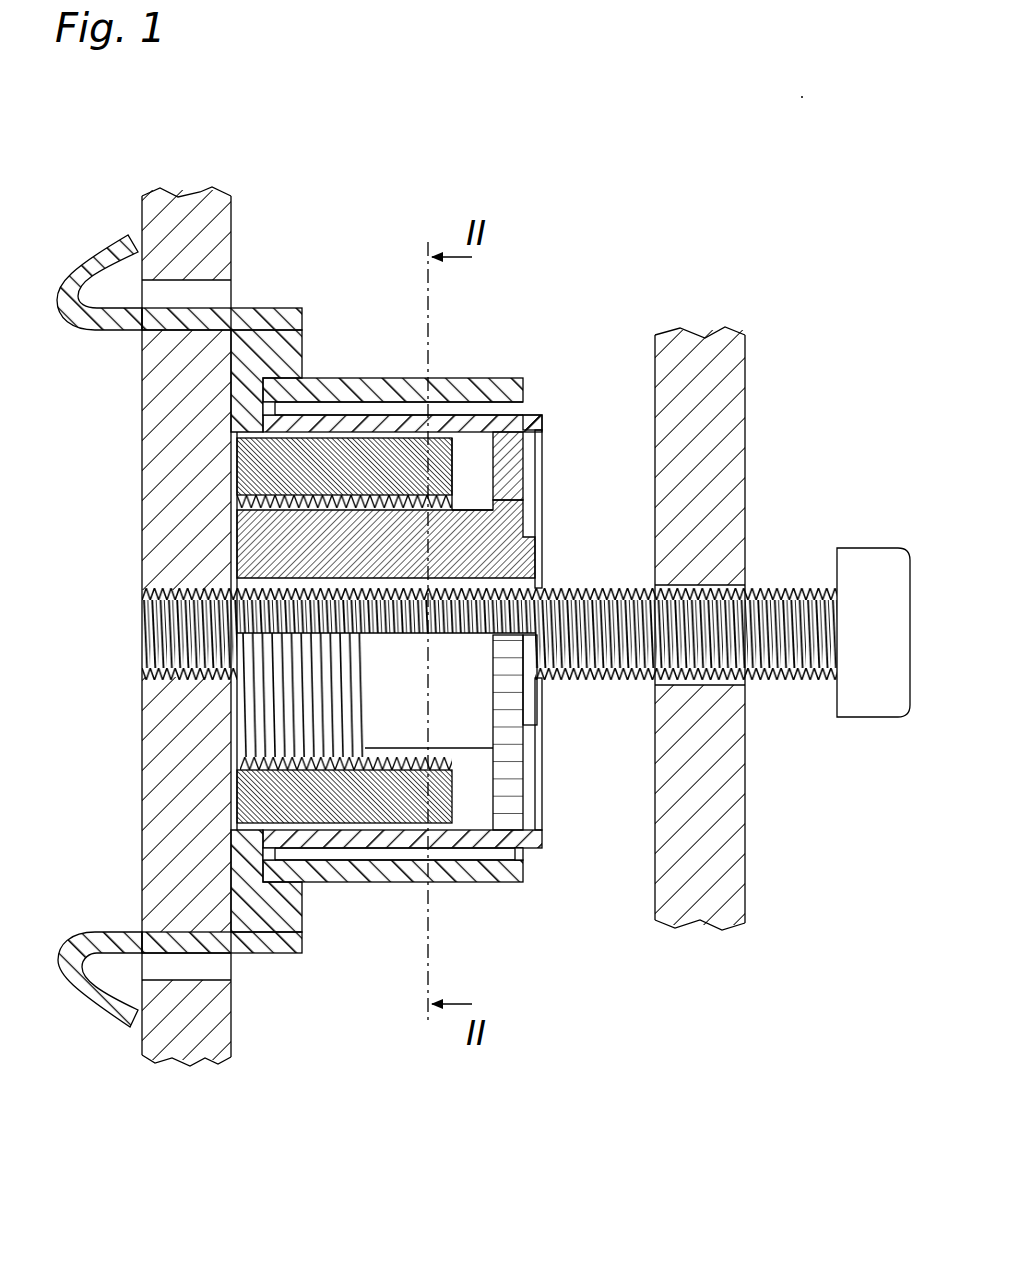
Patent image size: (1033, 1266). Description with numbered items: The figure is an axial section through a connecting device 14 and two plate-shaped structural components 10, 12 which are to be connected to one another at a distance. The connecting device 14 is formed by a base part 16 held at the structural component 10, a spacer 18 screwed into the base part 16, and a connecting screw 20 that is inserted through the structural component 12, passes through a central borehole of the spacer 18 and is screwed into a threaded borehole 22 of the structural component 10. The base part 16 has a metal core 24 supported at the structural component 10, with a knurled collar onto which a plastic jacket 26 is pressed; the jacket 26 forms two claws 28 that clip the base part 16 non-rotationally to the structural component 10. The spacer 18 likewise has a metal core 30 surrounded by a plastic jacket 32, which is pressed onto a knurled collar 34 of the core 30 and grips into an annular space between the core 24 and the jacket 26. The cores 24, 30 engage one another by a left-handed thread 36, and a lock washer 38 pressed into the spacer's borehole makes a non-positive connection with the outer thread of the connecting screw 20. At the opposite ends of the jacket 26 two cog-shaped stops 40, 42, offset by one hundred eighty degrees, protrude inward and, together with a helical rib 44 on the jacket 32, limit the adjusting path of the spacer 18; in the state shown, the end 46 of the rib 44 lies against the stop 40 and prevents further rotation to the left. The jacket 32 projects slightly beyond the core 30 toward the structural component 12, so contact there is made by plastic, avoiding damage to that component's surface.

The structural component 10 is at (137, 450).
The structural component 12 is at (747, 430).
The connecting device 14 is at (582, 232).
The base part 16 is at (297, 304).
The spacer 18 is at (548, 453).
The connecting screw 20 is at (867, 543).
The threaded borehole 22 is at (140, 643).
The metal core 24 is at (453, 465).
The plastic jacket 26 is at (357, 388).
The claws 28 is at (97, 262).
The metal core 30 is at (538, 545).
The plastic jacket 32 is at (530, 417).
The knurled collar 34 is at (515, 772).
The left-handed thread 36 is at (250, 718).
The lock washer 38 is at (523, 492).
The cog-shaped stop 40 is at (263, 405).
The cog-shaped stop 42 is at (527, 857).
The rib 44 is at (277, 862).
The end of the rib 46 is at (300, 405).